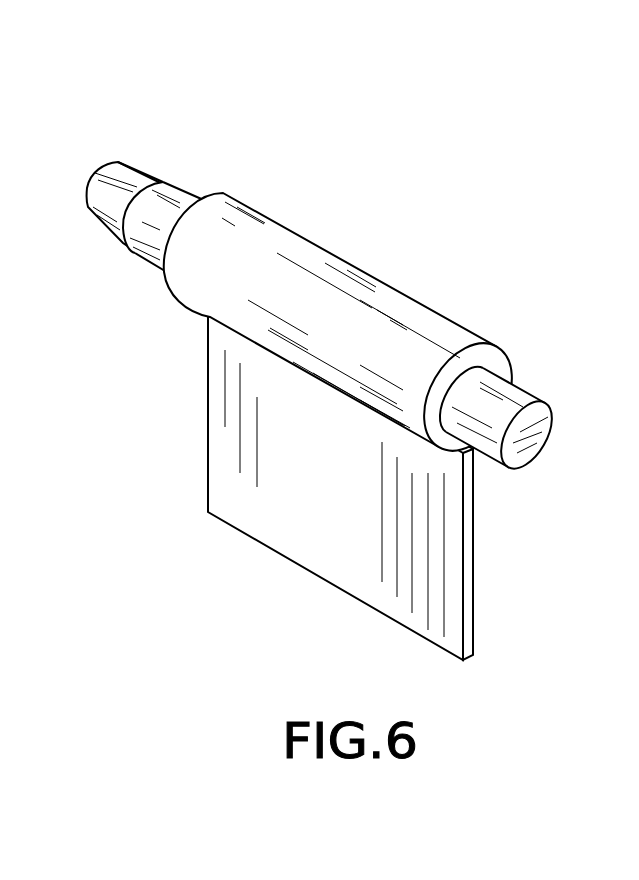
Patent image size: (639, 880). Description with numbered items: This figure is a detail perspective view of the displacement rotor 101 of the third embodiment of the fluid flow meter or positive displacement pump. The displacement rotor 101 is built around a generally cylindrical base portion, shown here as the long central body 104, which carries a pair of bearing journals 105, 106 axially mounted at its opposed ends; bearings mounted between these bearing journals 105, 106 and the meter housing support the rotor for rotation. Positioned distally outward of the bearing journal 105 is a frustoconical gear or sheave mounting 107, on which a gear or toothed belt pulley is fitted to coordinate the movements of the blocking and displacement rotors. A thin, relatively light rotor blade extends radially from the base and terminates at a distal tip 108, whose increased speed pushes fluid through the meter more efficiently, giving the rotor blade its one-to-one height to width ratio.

The displacement rotor 101 is at (457, 318).
The roller body 104 is at (318, 243).
The bearing journal 105 is at (185, 187).
The bearing journal 106 is at (525, 390).
The frustoconical gear or sheave mounting 107 is at (133, 167).
The distal tip of rotor blade 108 is at (303, 570).